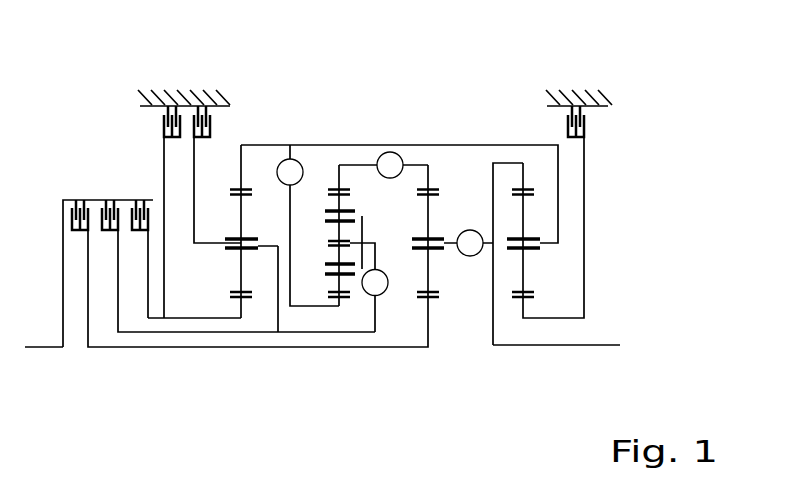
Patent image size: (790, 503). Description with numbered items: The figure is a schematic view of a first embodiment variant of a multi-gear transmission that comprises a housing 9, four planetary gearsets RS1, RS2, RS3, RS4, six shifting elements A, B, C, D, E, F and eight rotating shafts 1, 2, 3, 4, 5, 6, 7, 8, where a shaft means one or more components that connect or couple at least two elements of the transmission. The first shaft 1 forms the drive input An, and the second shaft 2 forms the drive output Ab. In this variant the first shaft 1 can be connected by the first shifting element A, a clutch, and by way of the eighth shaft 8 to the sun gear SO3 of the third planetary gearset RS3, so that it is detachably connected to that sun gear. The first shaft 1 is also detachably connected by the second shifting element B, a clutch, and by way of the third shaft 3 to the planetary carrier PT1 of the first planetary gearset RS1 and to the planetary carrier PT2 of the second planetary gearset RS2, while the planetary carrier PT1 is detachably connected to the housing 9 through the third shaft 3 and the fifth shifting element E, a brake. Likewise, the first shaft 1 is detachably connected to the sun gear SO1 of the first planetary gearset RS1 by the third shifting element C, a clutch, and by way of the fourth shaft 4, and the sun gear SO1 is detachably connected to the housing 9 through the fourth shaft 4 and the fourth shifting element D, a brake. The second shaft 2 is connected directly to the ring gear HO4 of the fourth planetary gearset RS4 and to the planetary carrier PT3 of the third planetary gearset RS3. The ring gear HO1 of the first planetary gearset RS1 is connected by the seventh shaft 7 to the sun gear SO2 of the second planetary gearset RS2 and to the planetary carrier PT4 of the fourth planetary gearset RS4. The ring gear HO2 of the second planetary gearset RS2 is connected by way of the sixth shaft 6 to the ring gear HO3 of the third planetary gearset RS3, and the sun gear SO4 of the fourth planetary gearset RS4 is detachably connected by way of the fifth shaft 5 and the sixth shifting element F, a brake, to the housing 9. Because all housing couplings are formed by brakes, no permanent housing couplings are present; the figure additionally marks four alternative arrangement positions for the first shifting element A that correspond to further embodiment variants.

The first shaft 1 is at (52, 349).
The second shaft 2 is at (563, 346).
The third shaft 3 is at (298, 333).
The fourth shaft 4 is at (181, 319).
The fifth shaft 5 is at (584, 213).
The sixth shaft 6 is at (349, 186).
The seventh shaft 7 is at (284, 146).
The eighth shaft 8 is at (429, 324).
The housing 9 is at (196, 90).
The drive input An is at (44, 335).
The drive output Ab is at (556, 334).
The first shifting element A is at (80, 203).
The second shifting element B is at (110, 203).
The third shifting element C is at (140, 203).
The fourth shifting element D is at (162, 121).
The fifth shifting element E is at (217, 174).
The sixth shifting element F is at (584, 121).
The first planetary gearset RS1 is at (241, 112).
The second planetary gearset RS2 is at (340, 112).
The third planetary gearset RS3 is at (428, 112).
The fourth planetary gearset RS4 is at (523, 112).
The ring gear of the first planetary gearset HO1 is at (251, 187).
The ring gear of the second planetary gearset HO2 is at (343, 187).
The ring gear of the third planetary gearset HO3 is at (436, 187).
The ring gear of the fourth planetary gearset HO4 is at (535, 187).
The sun gear of the first planetary gearset SO1 is at (235, 299).
The sun gear of the second planetary gearset SO2 is at (345, 308).
The sun gear of the third planetary gearset SO3 is at (440, 299).
The sun gear of the fourth planetary gearset SO4 is at (535, 299).
The planetary carrier of the first planetary gearset PT1 is at (264, 251).
The planetary carrier of the second planetary gearset PT2 is at (366, 232).
The planetary carrier of the third planetary gearset PT3 is at (447, 237).
The planetary carrier of the fourth planetary gearset PT4 is at (558, 247).